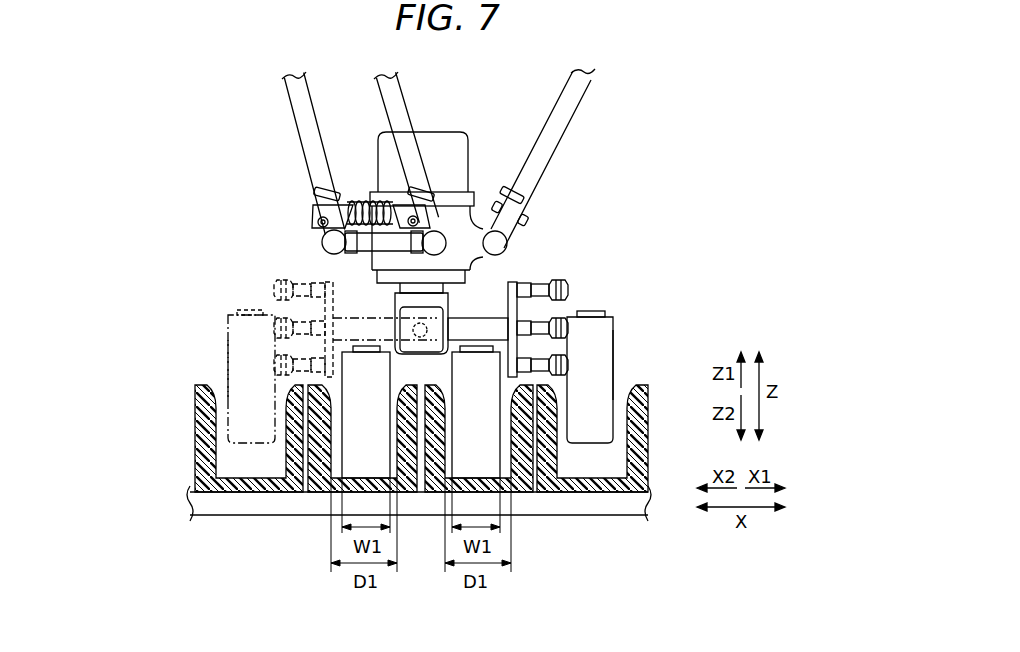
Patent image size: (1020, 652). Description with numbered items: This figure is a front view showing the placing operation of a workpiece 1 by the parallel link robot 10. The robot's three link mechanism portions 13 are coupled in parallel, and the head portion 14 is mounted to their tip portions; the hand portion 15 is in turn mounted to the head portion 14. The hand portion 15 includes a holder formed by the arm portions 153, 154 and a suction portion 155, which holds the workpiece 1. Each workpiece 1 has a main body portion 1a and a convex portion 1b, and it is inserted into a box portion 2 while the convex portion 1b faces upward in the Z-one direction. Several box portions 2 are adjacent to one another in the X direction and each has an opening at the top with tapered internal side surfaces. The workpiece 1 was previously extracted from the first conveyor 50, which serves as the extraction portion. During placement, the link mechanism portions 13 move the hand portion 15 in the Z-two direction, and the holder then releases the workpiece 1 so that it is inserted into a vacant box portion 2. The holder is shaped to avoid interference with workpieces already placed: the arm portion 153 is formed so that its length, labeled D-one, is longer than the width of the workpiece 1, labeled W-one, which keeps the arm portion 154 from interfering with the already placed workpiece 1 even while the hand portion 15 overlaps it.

The workpiece 1 is at (421, 404).
The main body portion 1a is at (227, 372).
The convex portion 1b is at (245, 309).
The box portion 2 is at (245, 492).
The parallel link robot 10 is at (590, 122).
The link mechanism portion 13 is at (299, 159).
The head portion 14 is at (462, 132).
The hand portion 15 is at (582, 260).
The first conveyor 50 is at (553, 512).
The arm portion 153 is at (476, 318).
The arm portion 154 is at (510, 281).
The suction portion 155 is at (541, 284).